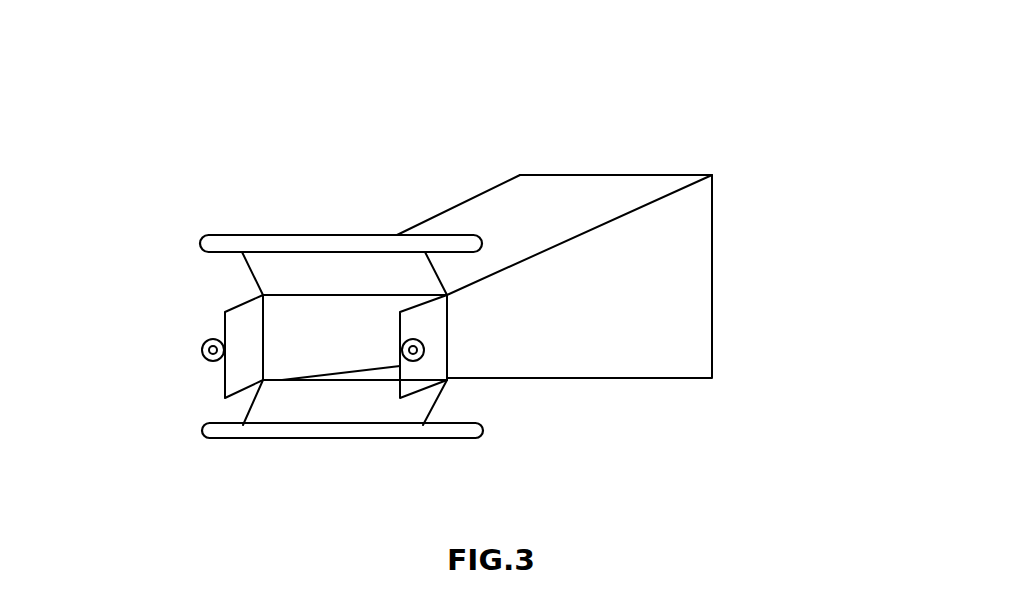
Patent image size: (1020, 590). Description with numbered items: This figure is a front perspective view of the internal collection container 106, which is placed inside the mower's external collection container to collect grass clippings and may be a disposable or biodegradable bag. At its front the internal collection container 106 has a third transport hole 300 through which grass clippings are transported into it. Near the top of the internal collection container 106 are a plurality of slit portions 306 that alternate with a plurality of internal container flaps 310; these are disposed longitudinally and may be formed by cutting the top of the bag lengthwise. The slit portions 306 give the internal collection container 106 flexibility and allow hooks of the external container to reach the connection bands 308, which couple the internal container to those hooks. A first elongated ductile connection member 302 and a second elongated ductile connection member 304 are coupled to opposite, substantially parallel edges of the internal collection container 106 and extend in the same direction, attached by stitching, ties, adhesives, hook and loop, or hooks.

The internal collection container 106 is at (377, 118).
The third transport hole 300 is at (342, 353).
The first elongated ductile connection member 302 is at (340, 247).
The second elongated ductile connection member 304 is at (357, 430).
The slit portions 306 is at (225, 280).
The connection bands 308 is at (202, 350).
The internal container flaps 310 is at (363, 270).